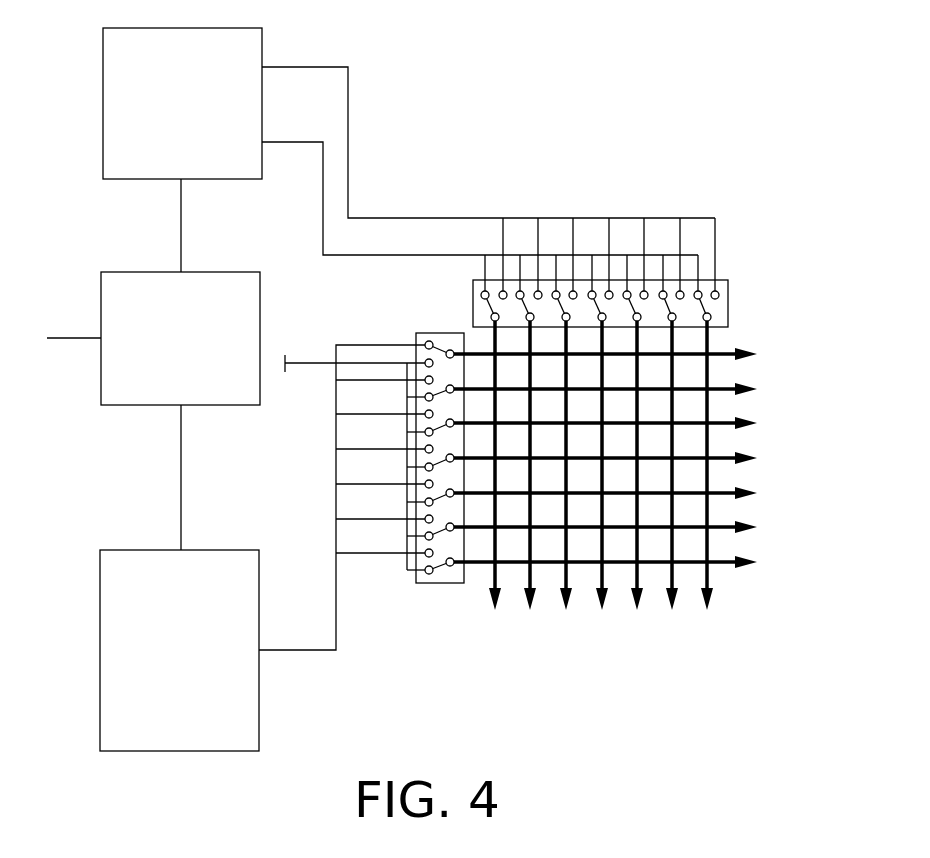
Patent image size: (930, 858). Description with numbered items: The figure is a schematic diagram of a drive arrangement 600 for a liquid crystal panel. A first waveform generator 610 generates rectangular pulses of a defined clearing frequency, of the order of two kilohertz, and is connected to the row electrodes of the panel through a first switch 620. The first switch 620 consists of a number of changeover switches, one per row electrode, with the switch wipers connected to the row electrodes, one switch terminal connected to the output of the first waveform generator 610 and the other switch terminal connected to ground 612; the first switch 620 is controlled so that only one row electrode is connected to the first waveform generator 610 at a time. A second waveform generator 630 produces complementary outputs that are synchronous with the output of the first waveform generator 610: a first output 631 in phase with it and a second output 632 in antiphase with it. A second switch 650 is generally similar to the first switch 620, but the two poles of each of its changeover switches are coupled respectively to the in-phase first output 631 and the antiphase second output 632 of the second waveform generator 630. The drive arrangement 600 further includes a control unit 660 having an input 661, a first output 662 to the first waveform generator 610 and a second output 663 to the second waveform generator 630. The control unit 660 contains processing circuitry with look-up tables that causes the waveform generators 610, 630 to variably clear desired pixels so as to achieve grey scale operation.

The drive arrangement 600 is at (610, 658).
The first waveform generator 610 is at (264, 548).
The ground 612 is at (305, 366).
The first switch 620 is at (437, 585).
The second waveform generator 630 is at (182, 103).
The first output 631 is at (348, 70).
The second output 632 is at (323, 208).
The second switch 650 is at (728, 300).
The control unit 660 is at (180, 338).
The input 661 is at (70, 336).
The first output 662 is at (181, 482).
The second output 663 is at (181, 222).